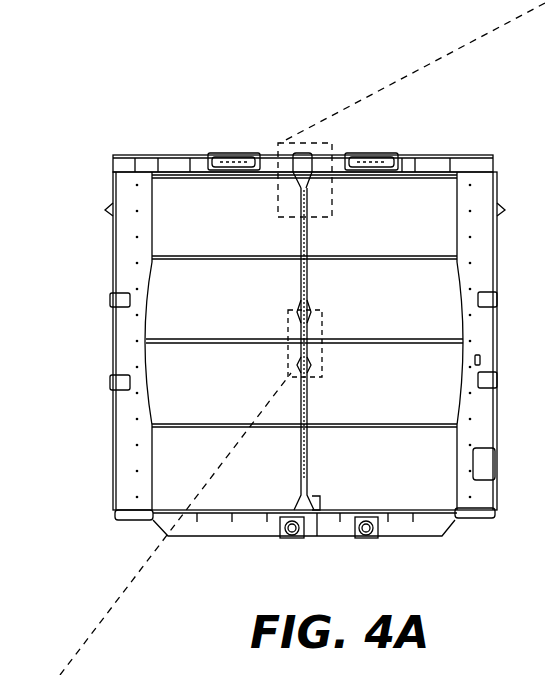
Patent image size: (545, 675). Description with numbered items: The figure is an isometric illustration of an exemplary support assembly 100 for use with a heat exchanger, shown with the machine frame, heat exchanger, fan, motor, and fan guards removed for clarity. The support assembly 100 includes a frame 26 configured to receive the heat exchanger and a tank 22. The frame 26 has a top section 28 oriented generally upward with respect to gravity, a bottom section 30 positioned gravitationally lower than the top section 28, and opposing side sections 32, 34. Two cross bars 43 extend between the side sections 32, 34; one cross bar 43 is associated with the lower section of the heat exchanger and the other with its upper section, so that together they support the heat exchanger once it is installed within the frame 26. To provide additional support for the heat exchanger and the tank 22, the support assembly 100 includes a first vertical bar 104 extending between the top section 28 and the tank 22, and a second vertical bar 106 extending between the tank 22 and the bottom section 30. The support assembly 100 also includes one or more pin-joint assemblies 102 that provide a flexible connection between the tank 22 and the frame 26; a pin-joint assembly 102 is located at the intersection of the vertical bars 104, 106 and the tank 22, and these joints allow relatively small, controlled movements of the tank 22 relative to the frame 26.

The support assembly 100 is at (245, 72).
The frame 26 is at (132, 155).
The top section 28 is at (170, 157).
The side section 32 is at (127, 278).
The side section 34 is at (484, 269).
The cross bar 43 is at (218, 255).
The tank 22 is at (248, 345).
The pin-joint assembly 102 is at (352, 199).
The first vertical bar 104 is at (308, 270).
The second vertical bar 106 is at (308, 404).
The bottom section 30 is at (243, 521).